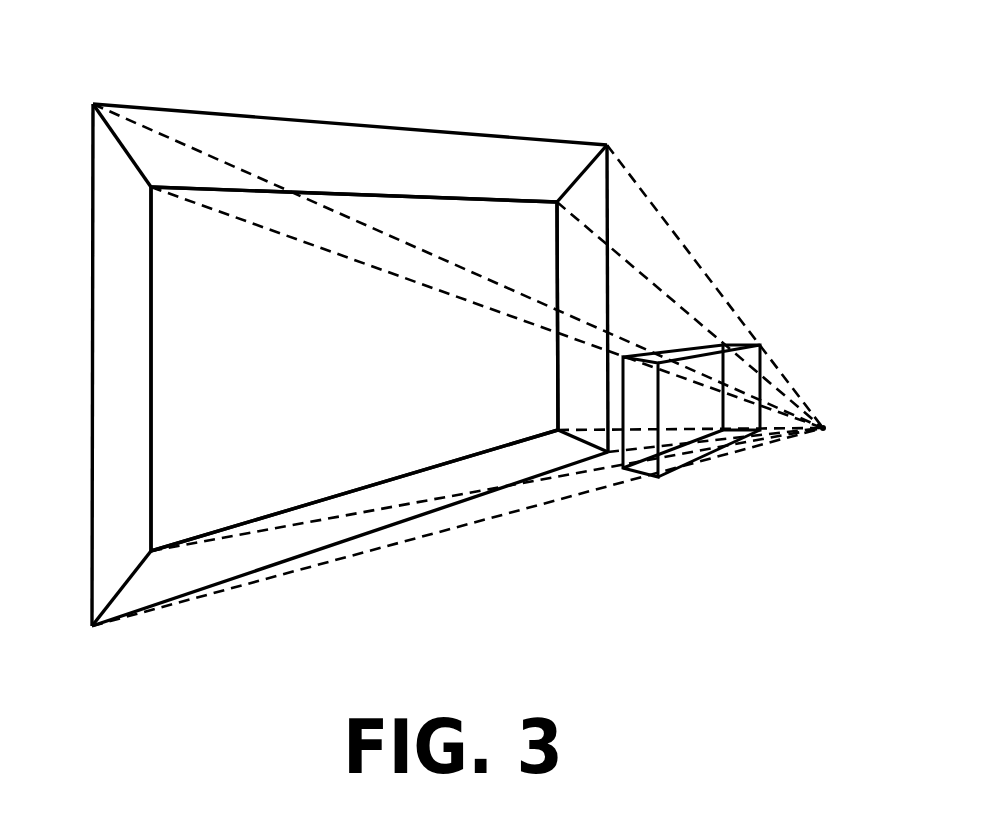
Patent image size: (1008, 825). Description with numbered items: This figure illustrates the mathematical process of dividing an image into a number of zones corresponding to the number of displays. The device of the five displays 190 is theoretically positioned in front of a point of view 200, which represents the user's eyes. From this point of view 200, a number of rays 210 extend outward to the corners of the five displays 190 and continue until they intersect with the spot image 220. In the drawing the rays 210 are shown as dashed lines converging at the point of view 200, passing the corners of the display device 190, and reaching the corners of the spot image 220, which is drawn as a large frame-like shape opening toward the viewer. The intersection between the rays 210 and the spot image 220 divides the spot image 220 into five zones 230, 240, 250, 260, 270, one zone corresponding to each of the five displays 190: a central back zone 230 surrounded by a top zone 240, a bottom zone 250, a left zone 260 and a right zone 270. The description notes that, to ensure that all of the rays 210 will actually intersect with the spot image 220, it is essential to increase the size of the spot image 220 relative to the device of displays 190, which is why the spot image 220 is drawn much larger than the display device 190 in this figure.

The five displays 190 is at (772, 360).
The point of view 200 is at (826, 427).
The rays 210 is at (175, 140).
The spot image 220 is at (455, 127).
The zone 230 is at (285, 340).
The zone 240 is at (338, 143).
The zone 250 is at (200, 567).
The zone 260 is at (112, 347).
The zone 270 is at (575, 267).